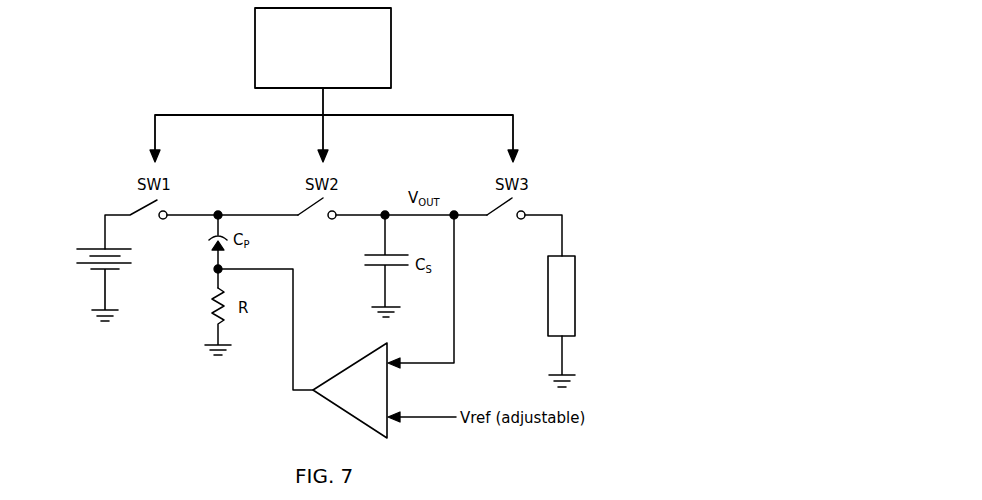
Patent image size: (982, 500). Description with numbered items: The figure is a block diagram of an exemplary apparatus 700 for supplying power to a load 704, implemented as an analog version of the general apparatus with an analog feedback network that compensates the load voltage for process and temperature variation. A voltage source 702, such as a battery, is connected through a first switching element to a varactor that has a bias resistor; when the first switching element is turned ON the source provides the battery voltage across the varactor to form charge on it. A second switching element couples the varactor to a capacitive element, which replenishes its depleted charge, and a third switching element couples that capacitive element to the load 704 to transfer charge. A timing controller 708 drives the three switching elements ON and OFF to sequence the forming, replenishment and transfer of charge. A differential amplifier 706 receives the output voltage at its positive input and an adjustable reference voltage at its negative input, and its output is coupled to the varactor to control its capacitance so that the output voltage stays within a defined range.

The apparatus 700 is at (546, 71).
The voltage source 702 is at (90, 247).
The load 704 is at (572, 252).
The differential amplifier 706 is at (362, 356).
The timing controller 708 is at (256, 44).